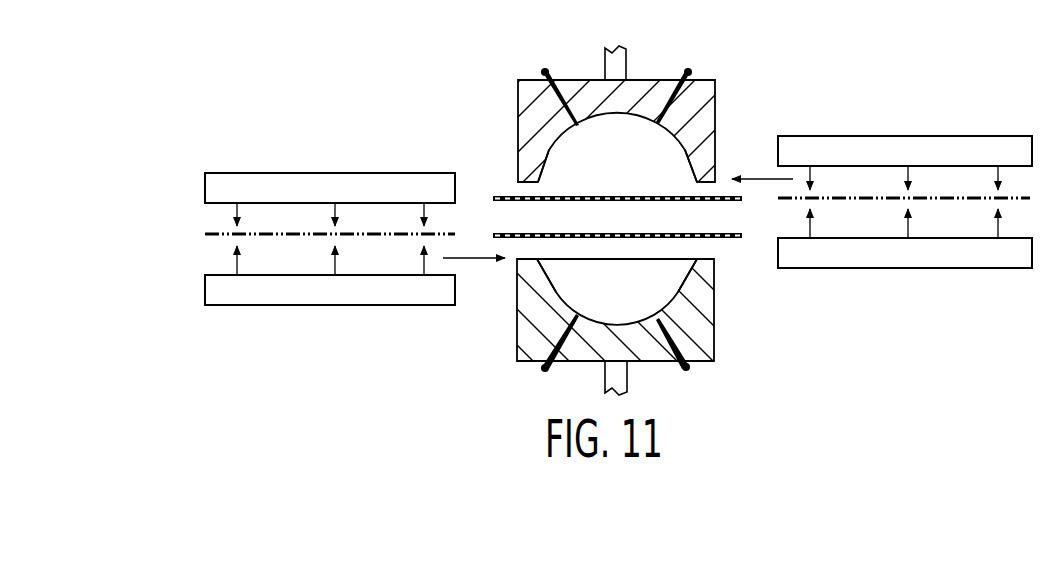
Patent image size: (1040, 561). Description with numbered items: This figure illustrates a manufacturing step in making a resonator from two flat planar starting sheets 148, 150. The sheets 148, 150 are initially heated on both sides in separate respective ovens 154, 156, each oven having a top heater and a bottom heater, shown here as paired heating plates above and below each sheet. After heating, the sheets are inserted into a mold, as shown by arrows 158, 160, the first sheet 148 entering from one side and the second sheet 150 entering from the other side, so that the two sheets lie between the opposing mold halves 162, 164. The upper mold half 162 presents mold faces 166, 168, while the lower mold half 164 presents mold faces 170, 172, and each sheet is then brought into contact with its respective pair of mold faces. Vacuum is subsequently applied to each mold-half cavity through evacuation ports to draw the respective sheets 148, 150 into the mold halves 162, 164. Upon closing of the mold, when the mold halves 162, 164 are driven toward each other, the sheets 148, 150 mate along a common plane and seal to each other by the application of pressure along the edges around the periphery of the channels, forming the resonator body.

The starting sheet 148 is at (508, 196).
The starting sheet 150 is at (511, 240).
The oven 154 is at (283, 174).
The oven 156 is at (893, 136).
The arrow 158 is at (472, 262).
The arrow 160 is at (762, 178).
The mold half 162 is at (718, 80).
The mold half 164 is at (715, 345).
The mold face 166 is at (534, 180).
The mold face 168 is at (700, 181).
The mold face 170 is at (535, 259).
The mold face 172 is at (700, 258).